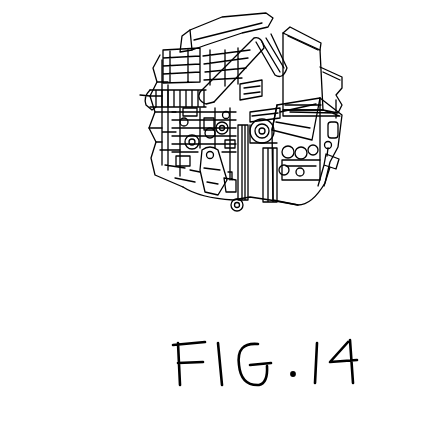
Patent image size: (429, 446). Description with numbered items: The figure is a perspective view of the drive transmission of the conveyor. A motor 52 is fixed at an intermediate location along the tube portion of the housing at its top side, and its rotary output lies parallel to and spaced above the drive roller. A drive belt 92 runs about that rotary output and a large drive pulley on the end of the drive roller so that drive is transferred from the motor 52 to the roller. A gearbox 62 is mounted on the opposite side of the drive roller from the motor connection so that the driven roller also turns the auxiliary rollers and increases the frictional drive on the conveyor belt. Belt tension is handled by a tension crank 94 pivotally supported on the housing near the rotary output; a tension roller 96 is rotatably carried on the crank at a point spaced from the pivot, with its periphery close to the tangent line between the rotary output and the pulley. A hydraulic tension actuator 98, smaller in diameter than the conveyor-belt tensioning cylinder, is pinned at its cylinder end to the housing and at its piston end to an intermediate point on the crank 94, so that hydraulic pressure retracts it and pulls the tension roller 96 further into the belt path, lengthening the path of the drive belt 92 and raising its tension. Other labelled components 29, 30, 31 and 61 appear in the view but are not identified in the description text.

The engine cover 29 is at (192, 52).
The housing 30 is at (280, 112).
The lower housing 31 is at (292, 190).
The motor 52 is at (157, 62).
The fitting 61 is at (331, 170).
The gearbox 62 is at (332, 148).
The drive belt 92 is at (230, 183).
The tension crank 94 is at (204, 184).
The tension roller 96 is at (236, 208).
The hydraulic tension actuator 98 is at (255, 195).